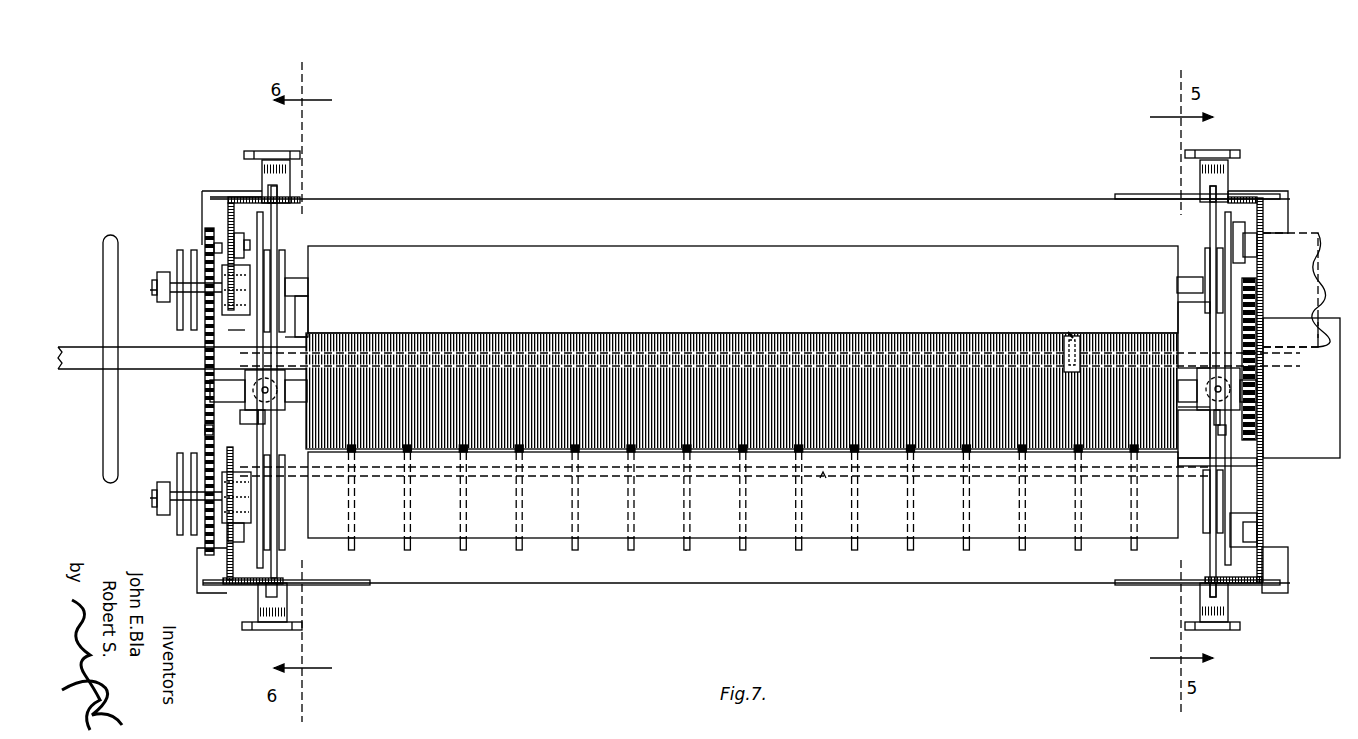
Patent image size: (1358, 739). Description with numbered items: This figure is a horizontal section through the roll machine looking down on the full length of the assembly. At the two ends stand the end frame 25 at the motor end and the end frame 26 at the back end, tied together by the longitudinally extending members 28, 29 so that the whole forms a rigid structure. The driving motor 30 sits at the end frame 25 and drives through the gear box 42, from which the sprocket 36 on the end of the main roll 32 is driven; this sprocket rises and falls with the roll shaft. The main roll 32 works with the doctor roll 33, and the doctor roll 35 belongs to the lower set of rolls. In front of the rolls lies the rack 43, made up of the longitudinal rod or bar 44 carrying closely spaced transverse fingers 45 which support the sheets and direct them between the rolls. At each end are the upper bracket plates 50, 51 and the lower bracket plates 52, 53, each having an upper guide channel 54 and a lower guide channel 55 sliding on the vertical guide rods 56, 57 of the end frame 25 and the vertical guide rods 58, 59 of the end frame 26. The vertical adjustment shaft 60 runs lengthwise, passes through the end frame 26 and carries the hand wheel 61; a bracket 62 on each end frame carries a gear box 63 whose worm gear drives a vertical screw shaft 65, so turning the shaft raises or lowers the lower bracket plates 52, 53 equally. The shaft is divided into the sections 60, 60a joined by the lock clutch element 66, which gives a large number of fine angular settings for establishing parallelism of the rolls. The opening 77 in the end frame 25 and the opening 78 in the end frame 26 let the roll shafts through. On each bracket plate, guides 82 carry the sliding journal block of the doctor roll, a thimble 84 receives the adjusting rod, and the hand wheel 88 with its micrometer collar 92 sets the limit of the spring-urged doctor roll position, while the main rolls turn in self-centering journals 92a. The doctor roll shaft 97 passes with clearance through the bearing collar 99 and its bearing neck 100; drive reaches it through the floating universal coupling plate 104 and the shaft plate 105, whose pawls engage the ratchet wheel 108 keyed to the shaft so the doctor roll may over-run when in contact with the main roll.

The end frame 25 is at (1266, 212).
The end frame 26 is at (228, 215).
The longitudinally extending member 28 is at (642, 583).
The longitudinally extending member 29 is at (680, 199).
The driving motor 30 is at (1301, 388).
The main roll 32 is at (506, 348).
The doctor roll 33 is at (496, 535).
The doctor roll 35 is at (834, 262).
The sprocket 36 is at (1230, 360).
The gear box 42 is at (1296, 290).
The rack 43 is at (822, 478).
The longitudinal rod or bar 44 is at (606, 470).
The transverse fingers 45 is at (740, 550).
The upper bracket plate 50 is at (1235, 462).
The upper bracket plate 51 is at (235, 334).
The lower bracket plate 52 is at (1288, 560).
The lower bracket plate 53 is at (250, 242).
The upper guide channel 54 is at (248, 232).
The lower guide channel 55 is at (250, 556).
The vertical guide rod 56 is at (1252, 531).
The vertical guide rod 57 is at (1257, 244).
The vertical guide rod 58 is at (230, 560).
The vertical guide rod 59 is at (220, 248).
The vertical adjustment shaft 60 is at (162, 369).
The shaft section 60a is at (1082, 333).
The hand wheel 61 is at (110, 237).
The bracket 62 is at (300, 307).
The gear box 63 is at (286, 342).
The vertical screw shaft 65 is at (245, 404).
The lock clutch element 66 is at (1067, 332).
The opening 77 is at (1263, 448).
The opening 78 is at (232, 425).
The guide 82 is at (276, 216).
The thimble 84 is at (270, 185).
The hand wheel 88 is at (274, 151).
The collar 92 is at (290, 170).
The journal 92a is at (240, 422).
The doctor roll shaft 97 is at (150, 290).
The bearing collar 99 is at (240, 292).
The bearing neck 100 is at (208, 240).
The floating universal coupling plate 104 is at (180, 262).
The shaft plate 105 is at (178, 322).
The ratchet wheel 108 is at (162, 275).